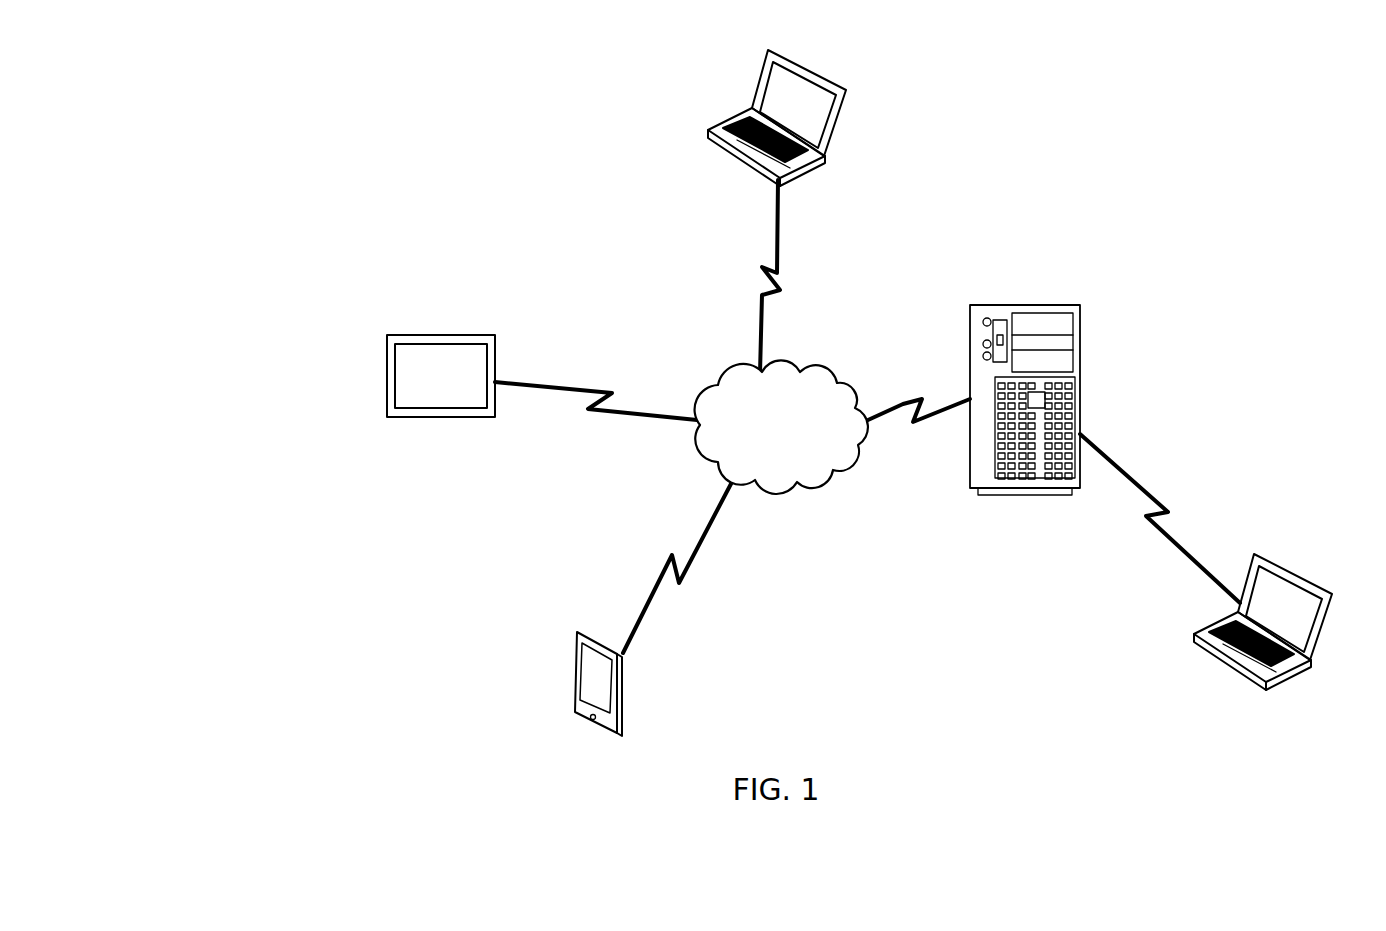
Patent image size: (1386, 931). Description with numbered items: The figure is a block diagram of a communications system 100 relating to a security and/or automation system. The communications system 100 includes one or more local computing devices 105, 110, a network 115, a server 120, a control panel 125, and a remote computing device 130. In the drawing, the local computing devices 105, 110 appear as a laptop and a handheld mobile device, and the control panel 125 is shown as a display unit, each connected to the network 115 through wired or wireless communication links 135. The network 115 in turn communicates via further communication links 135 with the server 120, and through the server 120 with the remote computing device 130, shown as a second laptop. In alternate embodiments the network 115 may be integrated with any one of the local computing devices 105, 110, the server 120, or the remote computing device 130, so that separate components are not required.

The communications system 100 is at (218, 765).
The local computing device 105 is at (748, 175).
The local computing device 110 is at (590, 723).
The network 115 is at (803, 362).
The server 120 is at (1047, 303).
The control panel 125 is at (443, 418).
The remote computing device 130 is at (1227, 675).
The communication links 135 is at (780, 278).